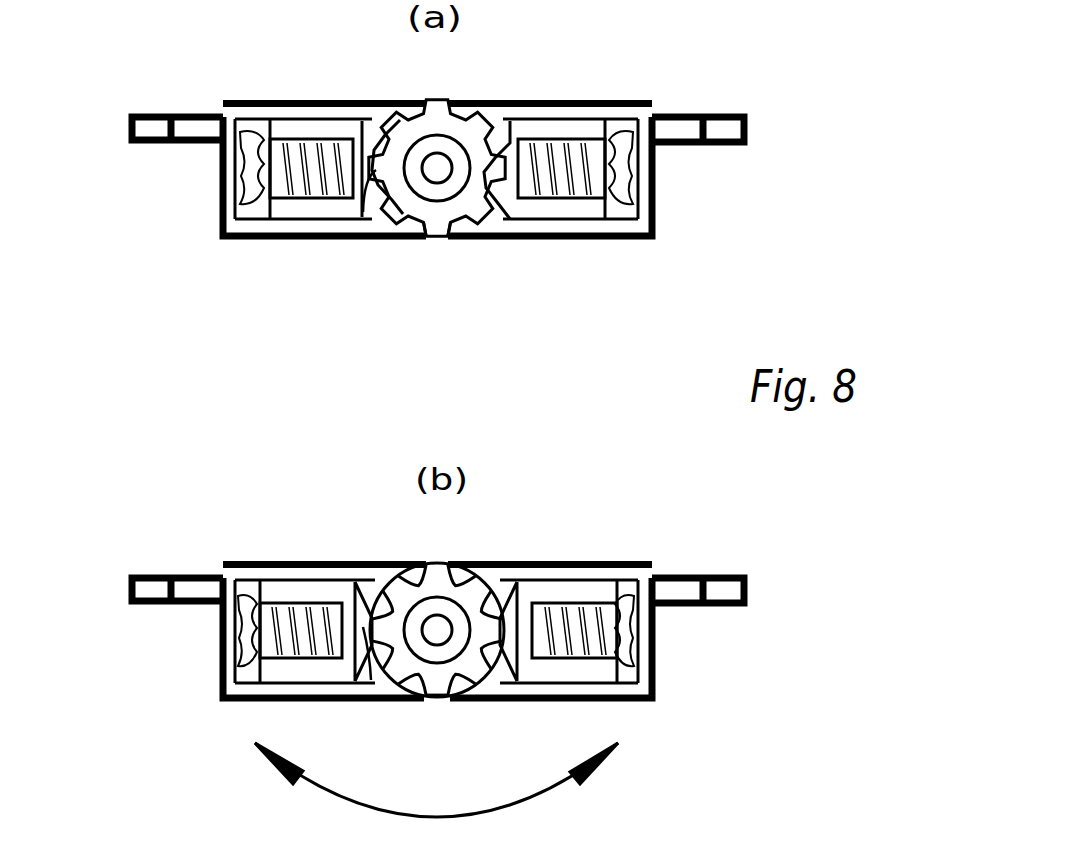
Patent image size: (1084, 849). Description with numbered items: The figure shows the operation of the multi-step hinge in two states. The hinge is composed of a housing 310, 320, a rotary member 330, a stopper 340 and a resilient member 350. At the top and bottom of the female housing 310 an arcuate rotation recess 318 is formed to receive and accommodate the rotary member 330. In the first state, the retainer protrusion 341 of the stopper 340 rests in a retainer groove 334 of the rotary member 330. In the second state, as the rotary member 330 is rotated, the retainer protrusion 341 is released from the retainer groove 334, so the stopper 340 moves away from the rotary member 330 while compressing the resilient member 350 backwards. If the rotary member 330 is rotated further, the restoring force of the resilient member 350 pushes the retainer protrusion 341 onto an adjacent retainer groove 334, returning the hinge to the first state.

The female housing 310 is at (438, 376).
The housing 320 is at (602, 110).
The rotation recess 318 is at (402, 237).
The rotary member 330 is at (453, 213).
The retainer groove 334 is at (483, 204).
The stopper 340 is at (308, 208).
The retainer protrusion 341 is at (369, 219).
The resilient member 350 is at (272, 172).